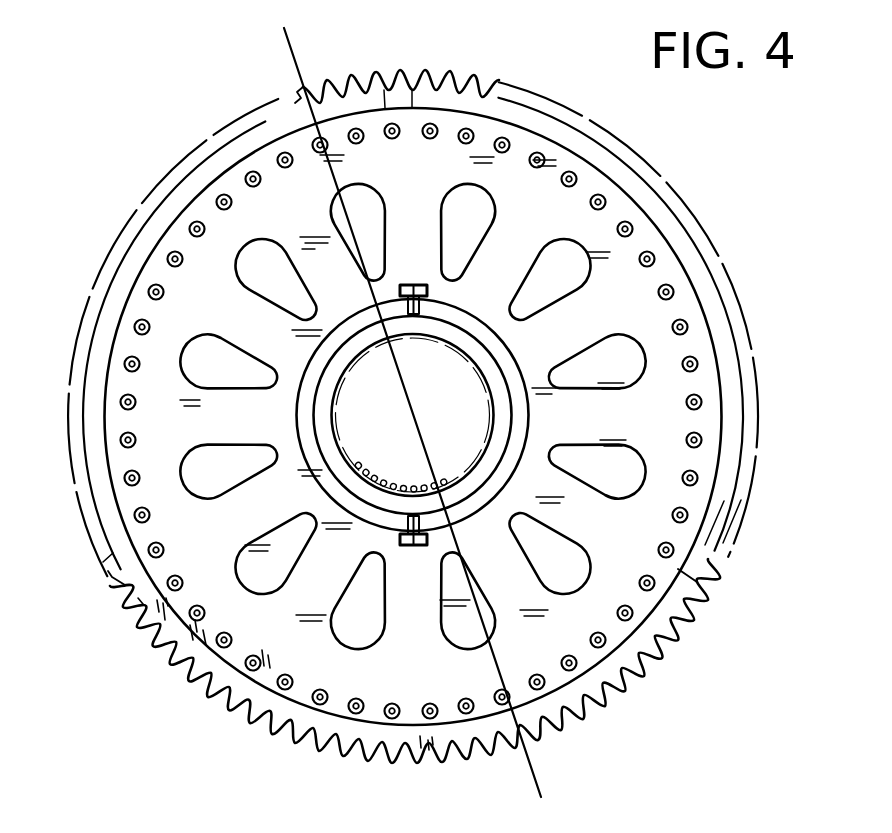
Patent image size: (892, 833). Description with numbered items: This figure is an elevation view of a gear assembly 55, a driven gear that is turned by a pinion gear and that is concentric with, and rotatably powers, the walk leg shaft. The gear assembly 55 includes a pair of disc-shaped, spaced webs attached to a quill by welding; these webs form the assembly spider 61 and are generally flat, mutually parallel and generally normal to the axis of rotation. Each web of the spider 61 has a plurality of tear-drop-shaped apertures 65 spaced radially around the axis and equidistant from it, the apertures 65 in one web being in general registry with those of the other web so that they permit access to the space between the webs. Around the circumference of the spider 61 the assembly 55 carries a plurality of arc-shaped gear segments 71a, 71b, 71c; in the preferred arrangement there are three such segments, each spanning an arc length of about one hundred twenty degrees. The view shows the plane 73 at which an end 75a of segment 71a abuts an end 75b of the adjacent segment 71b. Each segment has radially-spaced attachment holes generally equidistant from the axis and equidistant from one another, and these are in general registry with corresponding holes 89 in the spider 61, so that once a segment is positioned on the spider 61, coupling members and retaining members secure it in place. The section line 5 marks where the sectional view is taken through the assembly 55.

The section line 5- 5 is at (308, 33).
The gear assembly 55 is at (158, 162).
The assembly spider 61 is at (627, 578).
The tear-drop-shaped apertures 65 is at (203, 677).
The gear segment 71a is at (300, 733).
The gear segment 71b is at (106, 282).
The gear segment 71c is at (690, 236).
The plane 73 is at (133, 582).
The end of segment 75a is at (138, 598).
The end of adjacent segment 75b is at (131, 573).
The holes 89 is at (393, 718).